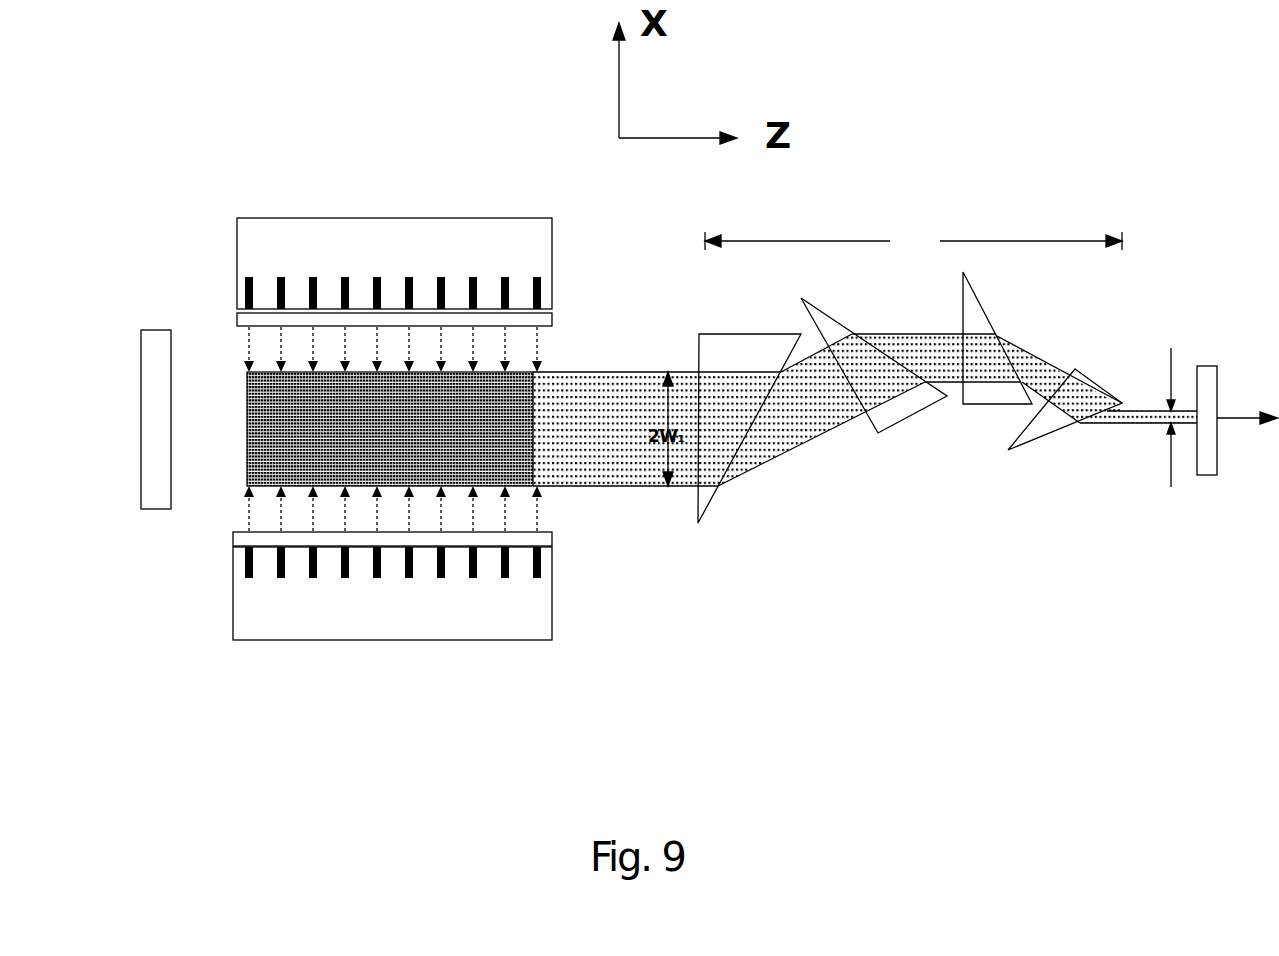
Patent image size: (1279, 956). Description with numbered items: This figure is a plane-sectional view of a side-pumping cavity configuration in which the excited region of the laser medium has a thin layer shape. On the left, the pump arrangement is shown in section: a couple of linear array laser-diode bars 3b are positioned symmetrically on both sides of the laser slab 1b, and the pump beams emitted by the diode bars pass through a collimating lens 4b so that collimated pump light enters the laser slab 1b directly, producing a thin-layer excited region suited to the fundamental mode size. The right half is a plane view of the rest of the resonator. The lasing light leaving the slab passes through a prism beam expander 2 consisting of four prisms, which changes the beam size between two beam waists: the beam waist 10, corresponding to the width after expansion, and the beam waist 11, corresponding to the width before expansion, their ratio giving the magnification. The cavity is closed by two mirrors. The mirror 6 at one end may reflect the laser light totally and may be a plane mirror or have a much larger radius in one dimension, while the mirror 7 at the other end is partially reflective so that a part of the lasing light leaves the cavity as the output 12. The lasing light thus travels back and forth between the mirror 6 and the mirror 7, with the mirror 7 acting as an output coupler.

The laser slab 1b is at (282, 435).
The couple linear array laser-diode bars 3b is at (403, 228).
The collimating lens 4b is at (549, 324).
The mirror 6 is at (155, 509).
The beam waist W1 10 is at (675, 447).
The beam waist W0 11 is at (1130, 452).
The mirror 7 is at (1206, 463).
The output 12 is at (1227, 400).
The prism beam expander 2 is at (913, 232).